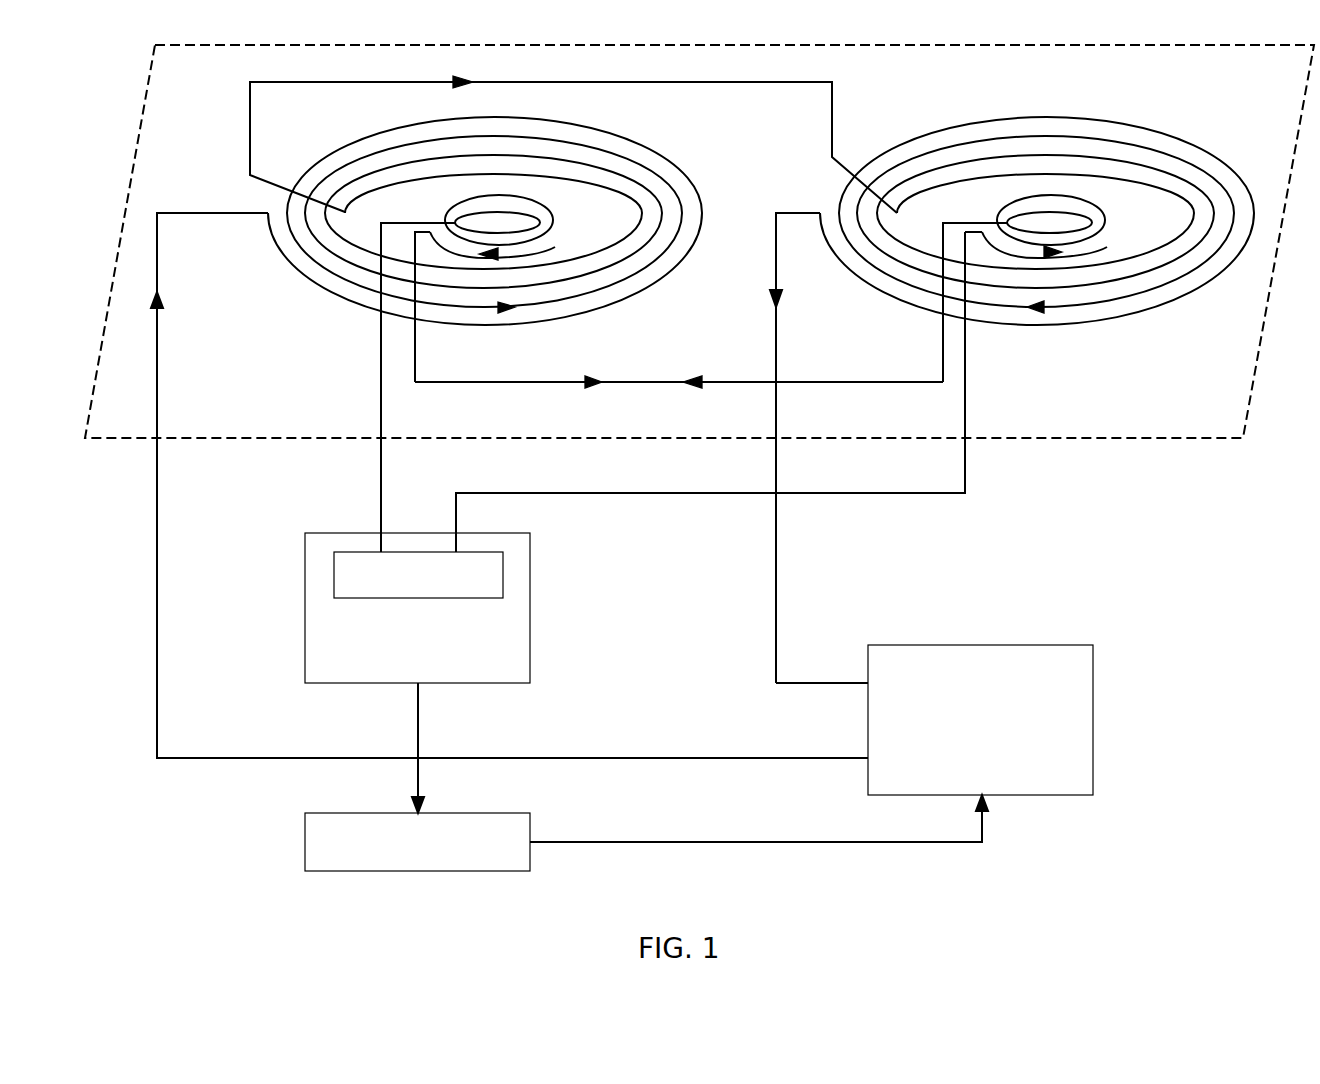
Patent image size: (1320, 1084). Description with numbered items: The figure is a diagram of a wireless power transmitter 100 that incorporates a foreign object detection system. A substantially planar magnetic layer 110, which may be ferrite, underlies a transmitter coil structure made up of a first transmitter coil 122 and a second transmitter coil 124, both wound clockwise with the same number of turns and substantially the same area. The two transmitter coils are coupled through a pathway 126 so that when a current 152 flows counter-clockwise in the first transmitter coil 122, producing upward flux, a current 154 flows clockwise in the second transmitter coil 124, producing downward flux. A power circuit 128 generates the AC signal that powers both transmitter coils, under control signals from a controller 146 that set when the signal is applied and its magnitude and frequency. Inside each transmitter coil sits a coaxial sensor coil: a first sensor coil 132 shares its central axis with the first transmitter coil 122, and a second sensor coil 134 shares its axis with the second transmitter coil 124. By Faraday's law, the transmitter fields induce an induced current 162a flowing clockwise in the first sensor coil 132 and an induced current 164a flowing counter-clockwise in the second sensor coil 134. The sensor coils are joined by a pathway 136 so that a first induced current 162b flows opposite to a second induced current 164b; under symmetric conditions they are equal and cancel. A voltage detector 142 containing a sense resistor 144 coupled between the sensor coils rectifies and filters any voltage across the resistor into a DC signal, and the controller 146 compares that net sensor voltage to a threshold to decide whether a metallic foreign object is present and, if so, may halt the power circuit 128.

The wireless power transmitter 100 is at (1217, 730).
The magnetic layer 110 is at (1020, 440).
The first transmitter coil 122 is at (322, 295).
The second transmitter coil 124 is at (1108, 320).
The pathway 126 is at (688, 82).
The power circuit 128 is at (1093, 683).
The first sensor coil 132 is at (455, 215).
The second sensor coil 134 is at (1007, 215).
The pathway 136 is at (852, 381).
The voltage detector 142 is at (532, 645).
The sense resistor 144 is at (503, 573).
The controller 146 is at (305, 842).
The current 152 is at (508, 308).
The current 154 is at (1033, 308).
The induced current 162a is at (516, 246).
The first induced current 162b is at (588, 380).
The induced current 164a is at (1071, 243).
The second induced current 164b is at (688, 380).